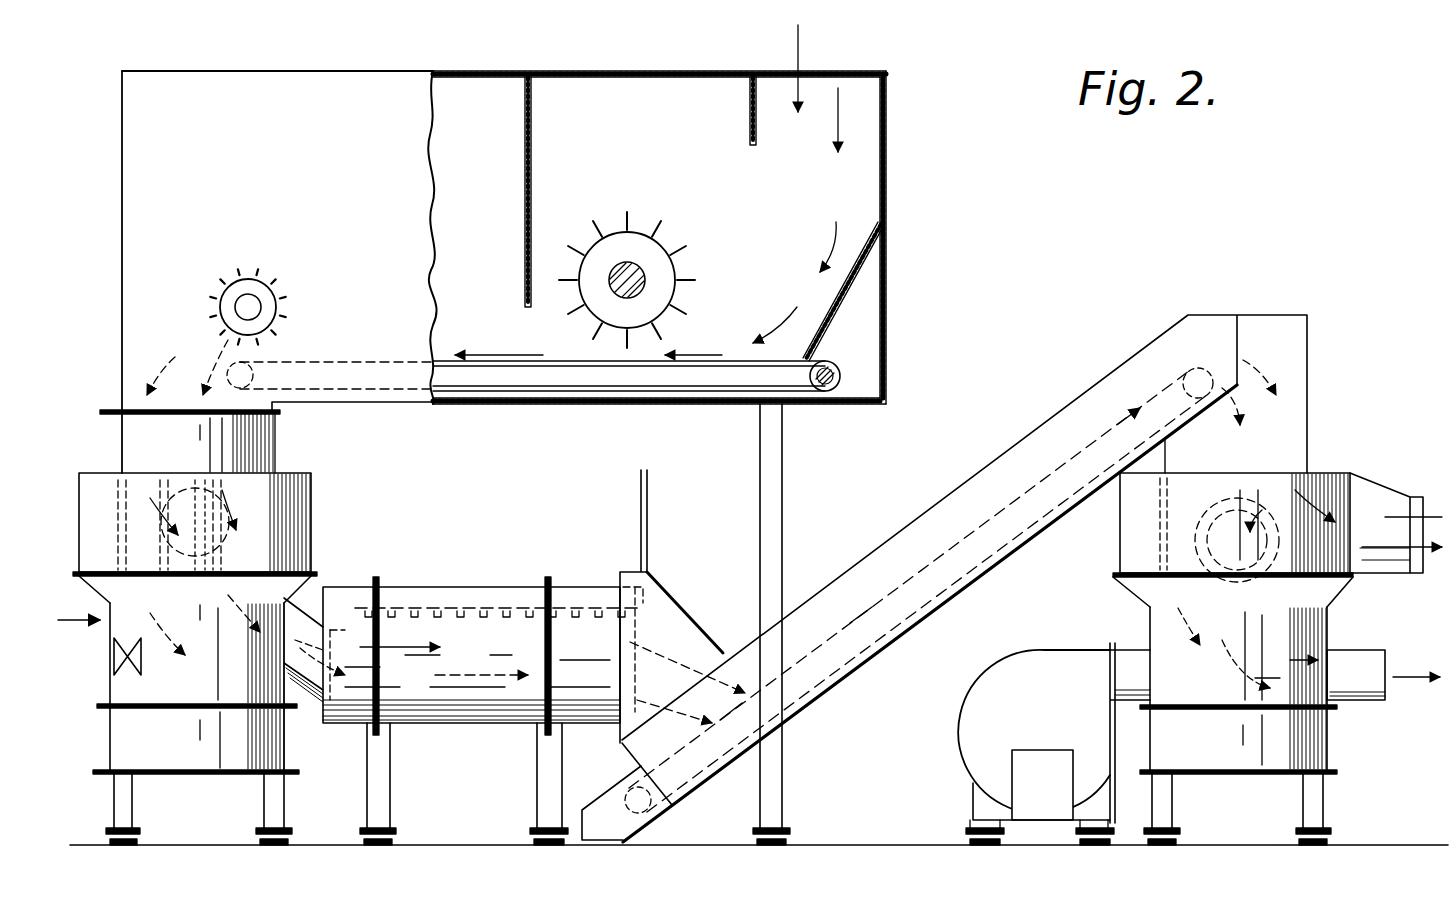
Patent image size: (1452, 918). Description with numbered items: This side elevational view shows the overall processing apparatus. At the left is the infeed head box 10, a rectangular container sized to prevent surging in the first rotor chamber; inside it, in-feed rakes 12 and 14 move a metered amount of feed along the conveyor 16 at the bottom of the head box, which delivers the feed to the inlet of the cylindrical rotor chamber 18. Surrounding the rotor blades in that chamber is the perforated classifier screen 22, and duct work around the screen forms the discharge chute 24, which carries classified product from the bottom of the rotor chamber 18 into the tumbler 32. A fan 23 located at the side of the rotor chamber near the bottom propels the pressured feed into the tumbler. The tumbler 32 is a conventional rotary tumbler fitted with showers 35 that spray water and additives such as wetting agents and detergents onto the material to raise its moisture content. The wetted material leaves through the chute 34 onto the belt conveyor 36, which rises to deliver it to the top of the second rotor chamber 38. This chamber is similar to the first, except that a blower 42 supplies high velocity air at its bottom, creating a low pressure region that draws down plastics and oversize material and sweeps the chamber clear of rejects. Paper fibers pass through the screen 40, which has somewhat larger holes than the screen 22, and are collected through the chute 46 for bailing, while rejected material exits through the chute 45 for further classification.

The infeed head box 10 is at (655, 146).
The in-feed rake 12 is at (677, 270).
The in-feed rake 14 is at (217, 289).
The conveyor 16 is at (562, 362).
The rotor chamber 18 is at (64, 618).
The classifier screen 22 is at (108, 686).
The fan 23 is at (141, 656).
The discharge chute 24 is at (300, 620).
The tumbler 32 is at (513, 653).
The chute 34 is at (690, 616).
The showers 35 is at (472, 603).
The belt conveyor 36 is at (902, 527).
The rotor chamber 38 is at (1102, 617).
The screen 40 is at (1135, 668).
The blower 42 is at (970, 708).
The chute 45 is at (1365, 650).
The chute 46 is at (1378, 490).